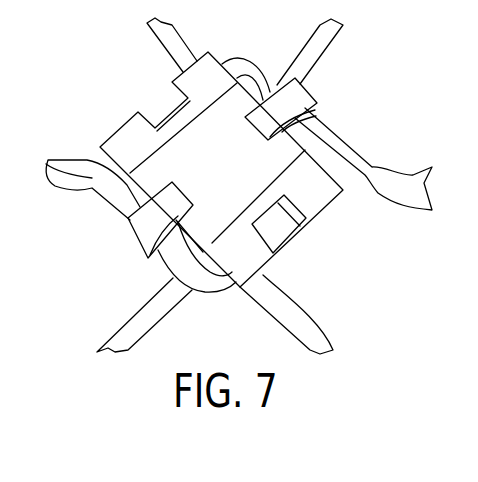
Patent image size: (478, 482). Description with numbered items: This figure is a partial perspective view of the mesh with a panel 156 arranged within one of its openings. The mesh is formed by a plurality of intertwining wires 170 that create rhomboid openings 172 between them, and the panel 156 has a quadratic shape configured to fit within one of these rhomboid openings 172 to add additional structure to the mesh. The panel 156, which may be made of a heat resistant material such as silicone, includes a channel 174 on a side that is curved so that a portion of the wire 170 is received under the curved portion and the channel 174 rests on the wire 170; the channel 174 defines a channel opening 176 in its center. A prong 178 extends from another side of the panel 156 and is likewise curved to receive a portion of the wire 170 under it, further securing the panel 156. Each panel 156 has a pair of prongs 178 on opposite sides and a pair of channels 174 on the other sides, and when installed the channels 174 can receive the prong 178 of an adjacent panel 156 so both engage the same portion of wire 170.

The panel 156 is at (237, 185).
The wires 170 is at (318, 132).
The rhomboid openings 172 is at (183, 247).
The channel 174 is at (323, 202).
The channel opening 176 is at (288, 222).
The prong 178 is at (291, 98).